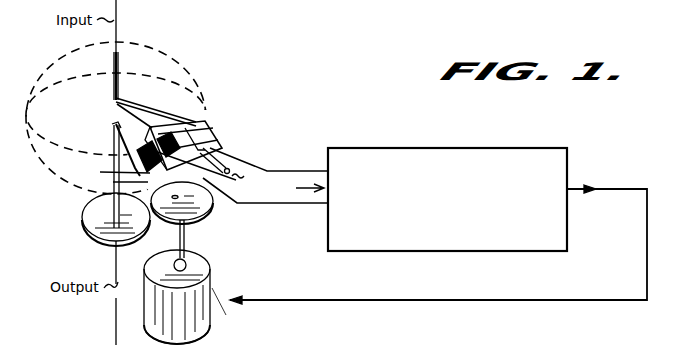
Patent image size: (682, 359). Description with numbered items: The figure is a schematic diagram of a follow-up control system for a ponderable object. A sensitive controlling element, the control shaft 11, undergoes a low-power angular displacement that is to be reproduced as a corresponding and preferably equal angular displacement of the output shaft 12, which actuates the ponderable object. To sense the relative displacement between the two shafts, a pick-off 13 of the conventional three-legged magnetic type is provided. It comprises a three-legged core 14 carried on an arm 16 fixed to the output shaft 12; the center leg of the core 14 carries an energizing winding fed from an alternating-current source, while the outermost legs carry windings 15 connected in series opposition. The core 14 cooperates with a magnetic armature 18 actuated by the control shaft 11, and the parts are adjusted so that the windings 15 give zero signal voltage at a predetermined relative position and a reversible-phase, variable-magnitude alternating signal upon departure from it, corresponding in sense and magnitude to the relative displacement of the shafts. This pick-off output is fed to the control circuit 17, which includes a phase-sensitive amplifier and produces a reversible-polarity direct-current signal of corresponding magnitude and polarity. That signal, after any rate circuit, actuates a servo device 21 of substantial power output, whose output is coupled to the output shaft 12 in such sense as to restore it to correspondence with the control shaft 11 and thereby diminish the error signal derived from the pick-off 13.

The control shaft 11 is at (118, 55).
The output shaft 12 is at (114, 263).
The pick-off 13 is at (252, 111).
The three-legged core 14 is at (228, 164).
The windings 15 is at (213, 159).
The arm 16 is at (113, 168).
The control circuit 17 is at (345, 152).
The magnetic armature 18 is at (200, 118).
The servo device 21 is at (210, 272).